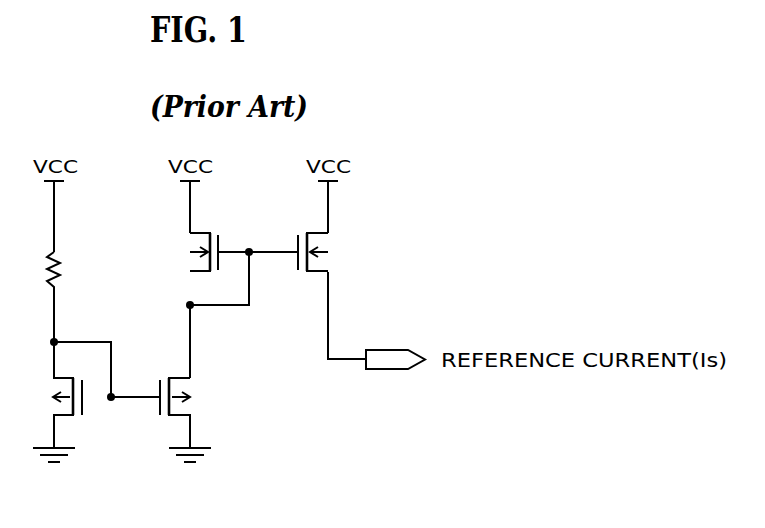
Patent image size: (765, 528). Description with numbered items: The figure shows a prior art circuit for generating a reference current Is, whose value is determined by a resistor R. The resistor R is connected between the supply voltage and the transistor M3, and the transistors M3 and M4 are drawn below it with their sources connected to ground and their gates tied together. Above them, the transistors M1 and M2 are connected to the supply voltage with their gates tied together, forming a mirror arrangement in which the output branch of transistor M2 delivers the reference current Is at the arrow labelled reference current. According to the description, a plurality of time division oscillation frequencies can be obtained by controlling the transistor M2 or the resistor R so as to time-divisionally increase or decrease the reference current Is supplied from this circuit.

The resistor R is at (64, 297).
The transistor M1 is at (211, 237).
The transistor M2 is at (305, 237).
The transistor M3 is at (69, 402).
The transistor M4 is at (180, 407).